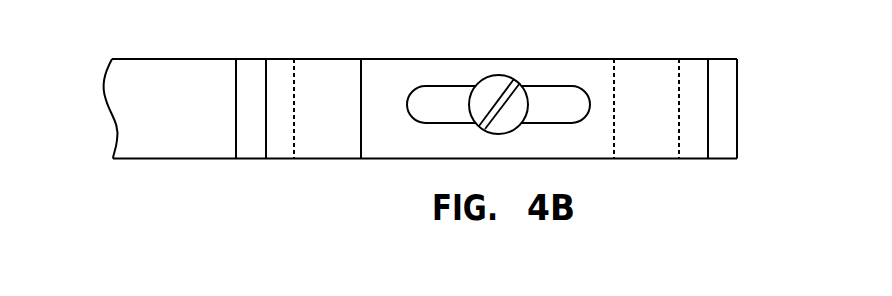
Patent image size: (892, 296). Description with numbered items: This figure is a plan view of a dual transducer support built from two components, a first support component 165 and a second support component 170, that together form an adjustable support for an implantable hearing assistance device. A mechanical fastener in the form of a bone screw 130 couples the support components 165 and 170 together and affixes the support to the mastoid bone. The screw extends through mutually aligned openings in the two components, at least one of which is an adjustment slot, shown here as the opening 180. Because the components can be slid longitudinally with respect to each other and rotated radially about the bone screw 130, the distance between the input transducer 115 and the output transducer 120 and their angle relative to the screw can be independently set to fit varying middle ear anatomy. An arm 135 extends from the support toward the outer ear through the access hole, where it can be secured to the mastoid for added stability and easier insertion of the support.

The arm 135 is at (125, 72).
The input transducer 115 is at (250, 72).
The support component 165 is at (327, 72).
The bone screw 130 is at (482, 75).
The opening 180 is at (555, 98).
The support component 170 is at (652, 72).
The output transducer 120 is at (723, 72).